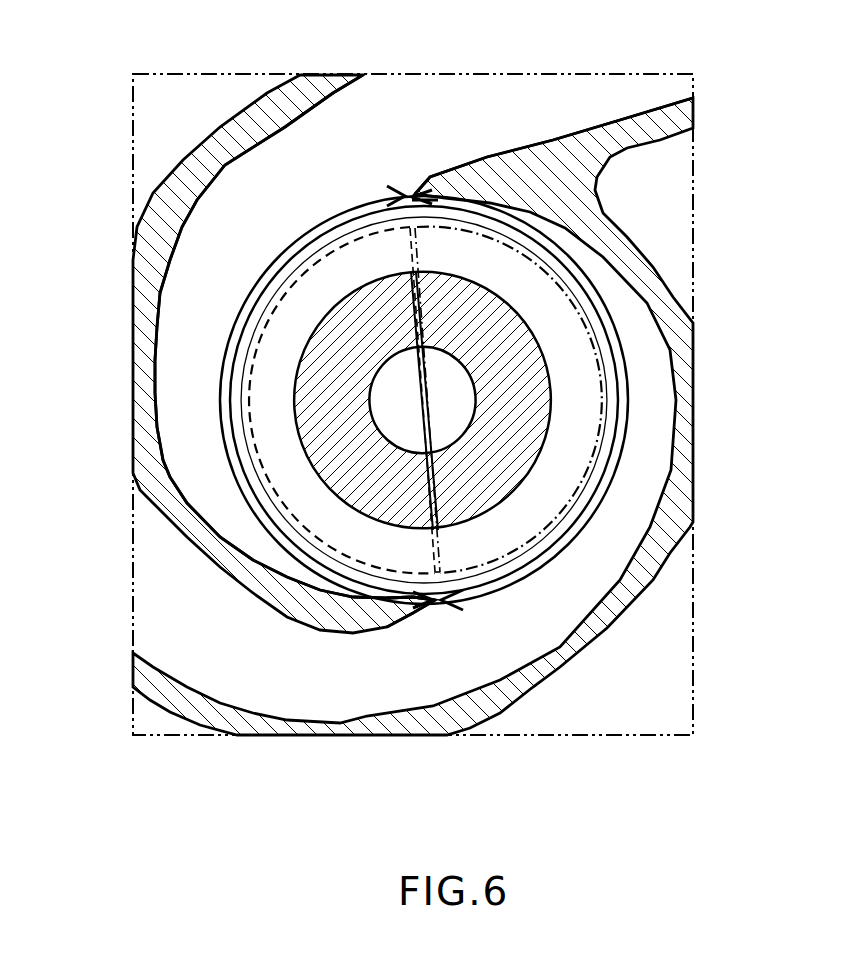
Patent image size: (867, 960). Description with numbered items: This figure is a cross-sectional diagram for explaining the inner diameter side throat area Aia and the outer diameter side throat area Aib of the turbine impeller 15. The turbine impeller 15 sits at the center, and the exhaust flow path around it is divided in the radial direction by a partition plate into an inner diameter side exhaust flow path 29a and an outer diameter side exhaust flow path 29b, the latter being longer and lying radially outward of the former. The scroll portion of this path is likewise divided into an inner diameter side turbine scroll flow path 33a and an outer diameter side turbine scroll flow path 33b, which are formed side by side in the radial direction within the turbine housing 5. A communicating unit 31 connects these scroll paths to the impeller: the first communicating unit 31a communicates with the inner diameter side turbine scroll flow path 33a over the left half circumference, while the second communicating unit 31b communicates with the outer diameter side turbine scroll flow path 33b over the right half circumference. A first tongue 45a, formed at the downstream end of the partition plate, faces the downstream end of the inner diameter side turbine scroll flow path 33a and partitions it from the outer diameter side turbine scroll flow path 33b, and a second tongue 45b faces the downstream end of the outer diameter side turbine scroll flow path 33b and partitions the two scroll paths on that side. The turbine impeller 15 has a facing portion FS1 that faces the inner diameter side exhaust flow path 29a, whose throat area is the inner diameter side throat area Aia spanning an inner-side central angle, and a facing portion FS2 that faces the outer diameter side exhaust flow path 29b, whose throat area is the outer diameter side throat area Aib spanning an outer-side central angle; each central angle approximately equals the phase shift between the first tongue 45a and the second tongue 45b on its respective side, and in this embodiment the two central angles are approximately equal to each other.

The turbine housing 5 is at (227, 128).
The turbine impeller 15 is at (603, 440).
The inner diameter side exhaust flow path 29a is at (203, 440).
The outer diameter side exhaust flow path 29b is at (153, 568).
The communicating unit 31 is at (610, 468).
The first communicating unit 31a is at (283, 537).
The second communicating unit 31b is at (597, 487).
The inner diameter side turbine scroll flow path 33a is at (203, 325).
The outer diameter side turbine scroll flow path 33b is at (597, 550).
The first tongue 45a is at (407, 615).
The second tongue 45b is at (425, 183).
The facing portion FS1 is at (293, 297).
The facing portion FS2 is at (503, 270).
The inner diameter side throat area Aia is at (365, 480).
The outer diameter side throat area Aib is at (482, 482).